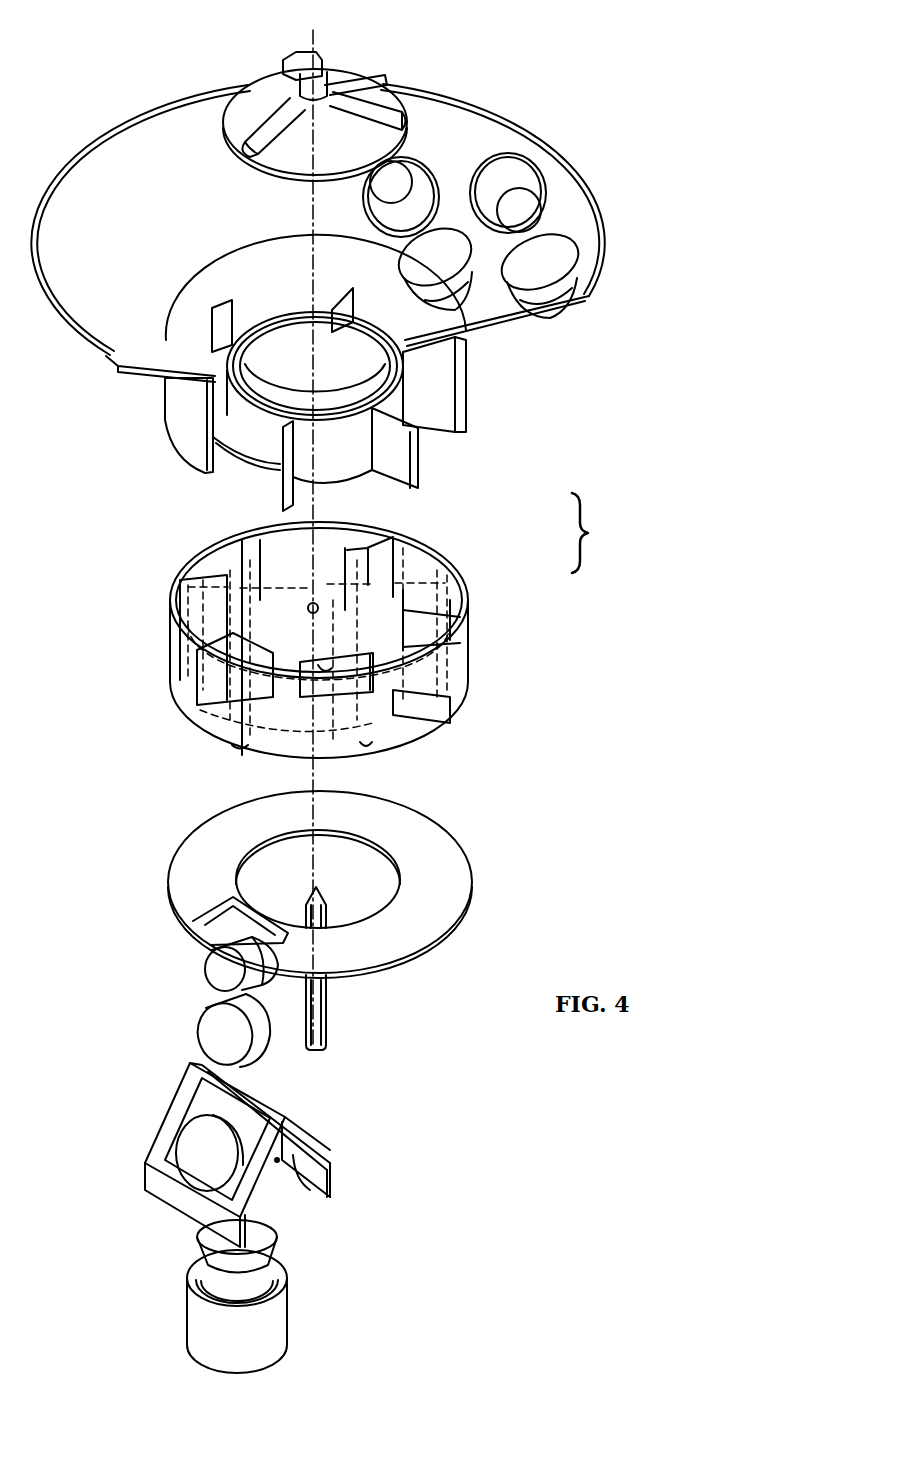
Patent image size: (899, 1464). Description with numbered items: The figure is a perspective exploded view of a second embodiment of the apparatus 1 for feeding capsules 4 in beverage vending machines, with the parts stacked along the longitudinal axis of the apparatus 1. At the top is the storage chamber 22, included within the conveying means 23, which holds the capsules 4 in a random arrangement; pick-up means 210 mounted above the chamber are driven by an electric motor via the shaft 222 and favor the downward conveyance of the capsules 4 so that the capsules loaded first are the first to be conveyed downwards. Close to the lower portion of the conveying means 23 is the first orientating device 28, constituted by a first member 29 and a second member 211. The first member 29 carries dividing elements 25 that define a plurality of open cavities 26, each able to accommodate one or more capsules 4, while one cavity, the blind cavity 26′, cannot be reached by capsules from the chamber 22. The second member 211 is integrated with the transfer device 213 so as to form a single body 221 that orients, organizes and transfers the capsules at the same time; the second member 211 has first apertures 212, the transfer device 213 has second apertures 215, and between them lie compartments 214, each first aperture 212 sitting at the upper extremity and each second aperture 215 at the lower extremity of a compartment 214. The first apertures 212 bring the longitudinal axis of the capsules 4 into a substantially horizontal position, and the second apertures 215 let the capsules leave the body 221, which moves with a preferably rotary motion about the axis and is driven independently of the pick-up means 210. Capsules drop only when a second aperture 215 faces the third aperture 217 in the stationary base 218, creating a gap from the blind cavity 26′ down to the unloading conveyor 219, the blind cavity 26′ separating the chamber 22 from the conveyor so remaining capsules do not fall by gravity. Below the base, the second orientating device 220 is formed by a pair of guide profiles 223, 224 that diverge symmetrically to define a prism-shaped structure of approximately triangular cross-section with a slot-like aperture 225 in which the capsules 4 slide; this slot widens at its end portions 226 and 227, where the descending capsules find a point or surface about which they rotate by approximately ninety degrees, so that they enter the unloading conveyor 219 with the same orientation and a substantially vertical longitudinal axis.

The apparatus 1 is at (530, 795).
The capsules 4 is at (462, 273).
The storage chamber 22 is at (103, 182).
The conveying means 23 is at (493, 112).
The dividing elements 25 is at (345, 302).
The open cavities 26 is at (283, 297).
The blind cavity 26′ is at (242, 450).
The first orientating device 28 is at (595, 533).
The first member 29 is at (342, 410).
The pick-up means 210 is at (262, 100).
The second member 211 is at (447, 595).
The first apertures 212 is at (257, 524).
The transfer device 213 is at (267, 753).
The compartments 214 is at (267, 542).
The second apertures 215 is at (505, 694).
The third aperture 217 is at (218, 918).
The stationary base 218 is at (442, 897).
The unloading conveyor 219 is at (290, 1330).
The second orientating device 220 is at (320, 1172).
The single body 221 is at (420, 743).
The shaft 222 is at (327, 1023).
The guide profile 223 is at (205, 1118).
The guide profile 224 is at (240, 1160).
The slot-like aperture 225 is at (258, 1092).
The end portion 226 is at (198, 1197).
The end portion 227 is at (300, 1180).